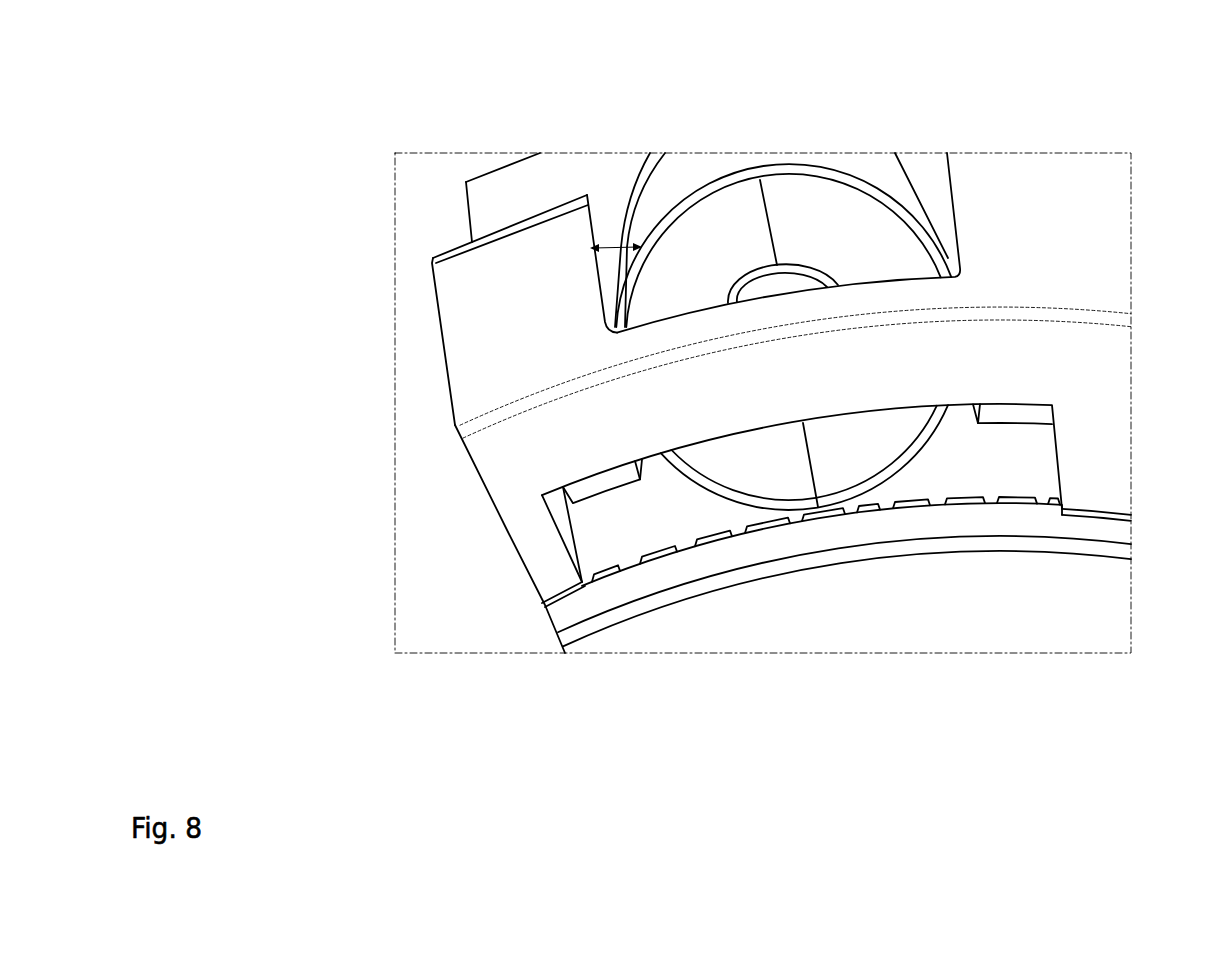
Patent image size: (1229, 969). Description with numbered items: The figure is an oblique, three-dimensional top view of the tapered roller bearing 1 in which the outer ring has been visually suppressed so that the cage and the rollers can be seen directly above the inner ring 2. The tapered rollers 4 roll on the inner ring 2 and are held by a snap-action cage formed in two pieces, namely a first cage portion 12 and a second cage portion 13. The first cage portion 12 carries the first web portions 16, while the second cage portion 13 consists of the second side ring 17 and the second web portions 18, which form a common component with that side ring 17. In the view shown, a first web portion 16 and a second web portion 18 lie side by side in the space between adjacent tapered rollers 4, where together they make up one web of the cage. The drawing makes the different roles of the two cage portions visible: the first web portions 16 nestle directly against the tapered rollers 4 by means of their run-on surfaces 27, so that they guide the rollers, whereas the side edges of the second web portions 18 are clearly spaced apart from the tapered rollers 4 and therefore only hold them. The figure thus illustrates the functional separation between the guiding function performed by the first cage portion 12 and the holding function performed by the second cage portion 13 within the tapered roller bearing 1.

The tapered roller bearing 1 is at (1100, 120).
The inner ring 2 is at (1107, 607).
The tapered rollers 4 is at (798, 192).
The first cage portion 12 is at (480, 145).
The first web portions 16 is at (492, 192).
The second cage portion 13 is at (507, 467).
The second side ring 17 is at (1108, 374).
The second web portions 18 is at (463, 300).
The run-on surfaces 27 is at (648, 187).